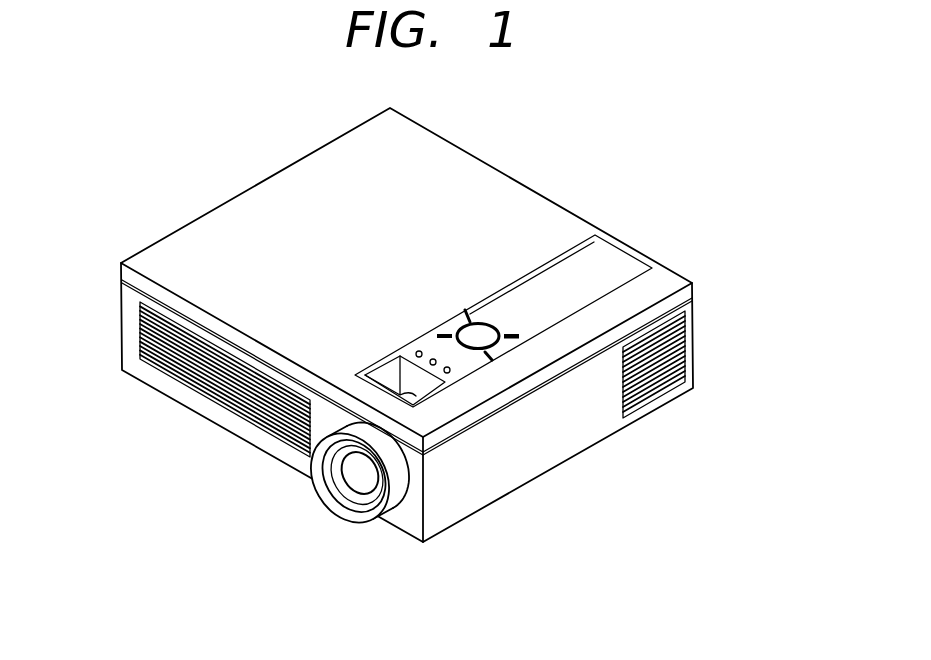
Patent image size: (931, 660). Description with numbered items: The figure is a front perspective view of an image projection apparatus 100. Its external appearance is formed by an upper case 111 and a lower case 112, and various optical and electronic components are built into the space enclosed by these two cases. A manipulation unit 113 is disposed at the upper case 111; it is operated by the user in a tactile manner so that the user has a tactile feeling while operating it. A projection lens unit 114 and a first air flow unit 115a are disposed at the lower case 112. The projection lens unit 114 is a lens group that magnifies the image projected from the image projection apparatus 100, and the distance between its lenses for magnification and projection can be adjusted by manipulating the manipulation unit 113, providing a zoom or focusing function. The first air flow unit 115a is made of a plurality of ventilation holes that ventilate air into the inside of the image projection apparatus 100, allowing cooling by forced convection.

The image projection apparatus 100 is at (570, 190).
The upper case 111 is at (692, 290).
The lower case 112 is at (690, 338).
The manipulation unit 113 is at (463, 365).
The projection lens unit 114 is at (363, 480).
The first air flow unit 115a is at (217, 397).